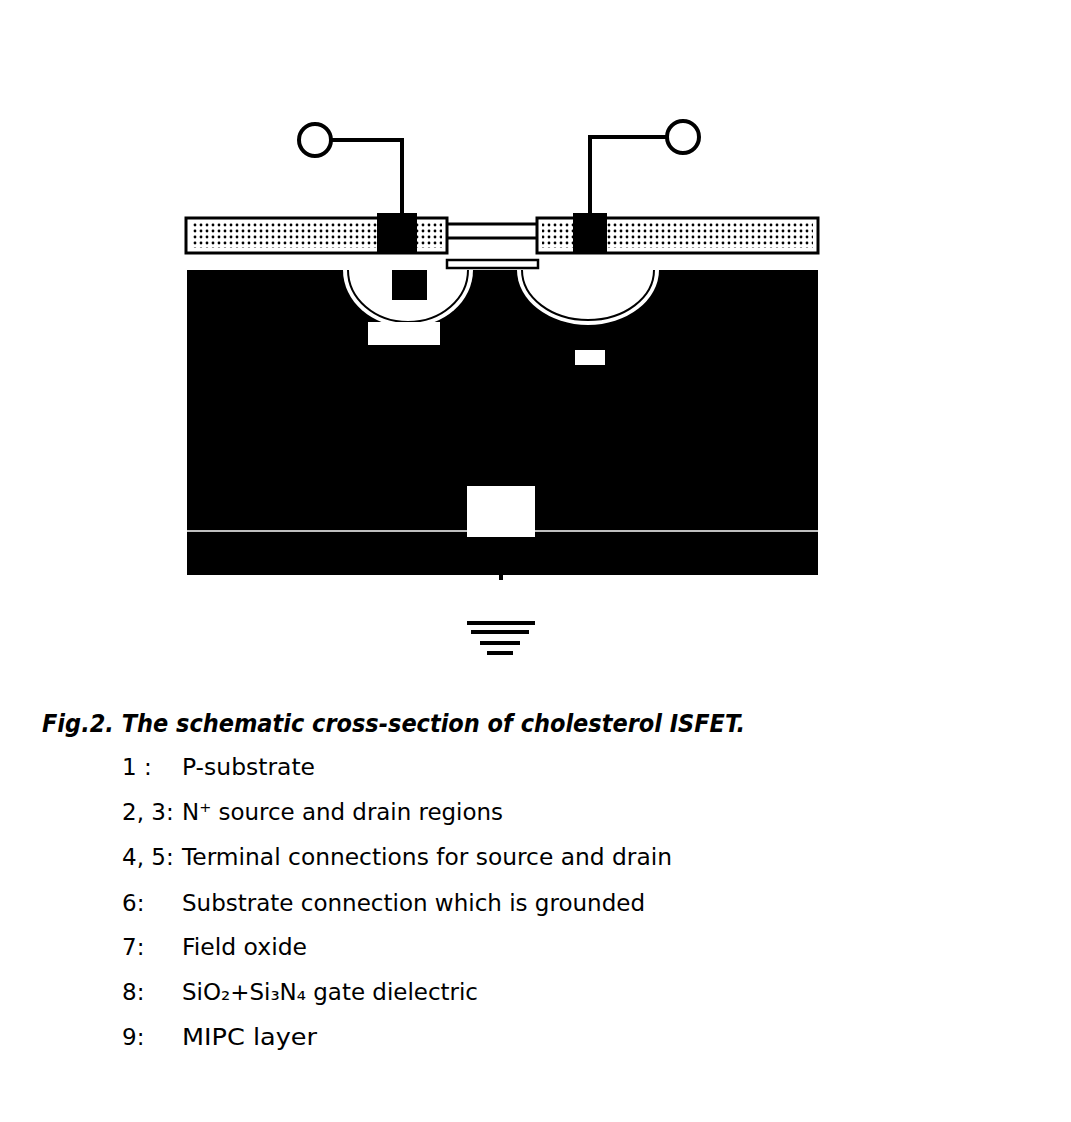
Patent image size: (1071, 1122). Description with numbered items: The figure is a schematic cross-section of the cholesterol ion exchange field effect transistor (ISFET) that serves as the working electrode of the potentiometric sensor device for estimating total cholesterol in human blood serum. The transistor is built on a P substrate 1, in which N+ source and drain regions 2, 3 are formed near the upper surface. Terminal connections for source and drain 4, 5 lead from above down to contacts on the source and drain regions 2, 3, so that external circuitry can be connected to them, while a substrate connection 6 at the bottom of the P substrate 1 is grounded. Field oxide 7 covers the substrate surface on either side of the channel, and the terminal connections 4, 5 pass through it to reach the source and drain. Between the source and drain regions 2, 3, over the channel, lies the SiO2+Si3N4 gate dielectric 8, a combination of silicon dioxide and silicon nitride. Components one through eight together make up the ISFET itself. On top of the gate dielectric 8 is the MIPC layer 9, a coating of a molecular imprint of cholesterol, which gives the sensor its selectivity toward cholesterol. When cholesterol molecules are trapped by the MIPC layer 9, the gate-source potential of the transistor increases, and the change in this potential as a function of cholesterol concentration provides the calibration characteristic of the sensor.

The P substrate 1 is at (502, 422).
The N+ source region 2 is at (408, 307).
The N+ drain region 3 is at (588, 317).
The terminal connection for source 4 is at (328, 155).
The terminal connection for drain 5 is at (657, 155).
The substrate connection 6 is at (836, 547).
The field oxide 7 is at (768, 258).
The SiO2+Si3N4 gate dielectric 8 is at (465, 110).
The MIPC layer 9 is at (509, 116).